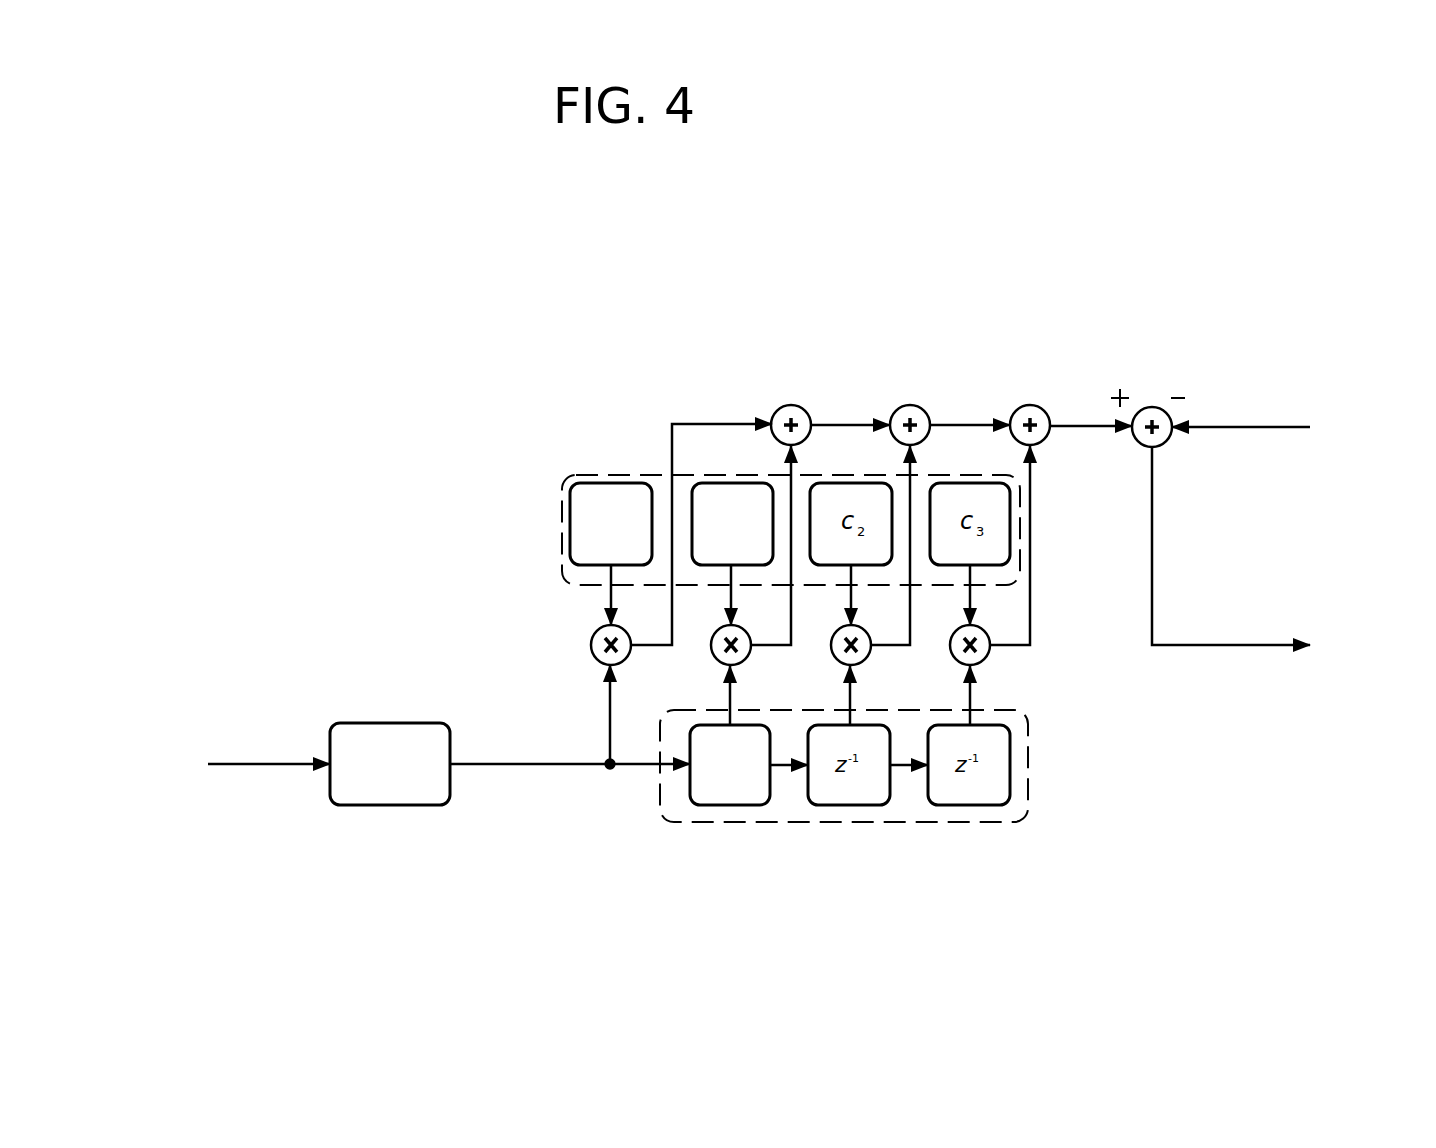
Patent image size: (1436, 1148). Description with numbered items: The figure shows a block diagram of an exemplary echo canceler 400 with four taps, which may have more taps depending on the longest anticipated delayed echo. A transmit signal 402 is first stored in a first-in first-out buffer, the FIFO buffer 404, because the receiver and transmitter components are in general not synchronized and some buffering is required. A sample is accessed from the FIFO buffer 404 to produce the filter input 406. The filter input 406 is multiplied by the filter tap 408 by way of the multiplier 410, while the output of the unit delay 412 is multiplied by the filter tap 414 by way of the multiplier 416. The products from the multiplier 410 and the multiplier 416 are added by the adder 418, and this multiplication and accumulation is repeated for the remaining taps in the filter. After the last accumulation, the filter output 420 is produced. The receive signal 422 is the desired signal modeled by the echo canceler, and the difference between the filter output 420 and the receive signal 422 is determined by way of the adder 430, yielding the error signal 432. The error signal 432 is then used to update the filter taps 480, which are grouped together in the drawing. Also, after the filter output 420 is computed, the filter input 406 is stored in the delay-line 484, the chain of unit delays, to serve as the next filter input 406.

The echo canceler 400 is at (1200, 265).
The transmit signal 402 is at (252, 766).
The FIFO buffer 404 is at (371, 806).
The filter input 406 is at (541, 766).
The filter tap 408 is at (563, 512).
The multiplier 410 is at (591, 645).
The unit delay 412 is at (717, 806).
The filter tap 414 is at (731, 483).
The multiplier 416 is at (717, 658).
The adder 418 is at (793, 405).
The filter output 420 is at (1073, 420).
The receive signal 422 is at (1253, 425).
The adder 430 is at (1158, 407).
The error signal 432 is at (1200, 645).
The filter taps 480 is at (602, 477).
The delay-line 484 is at (660, 797).